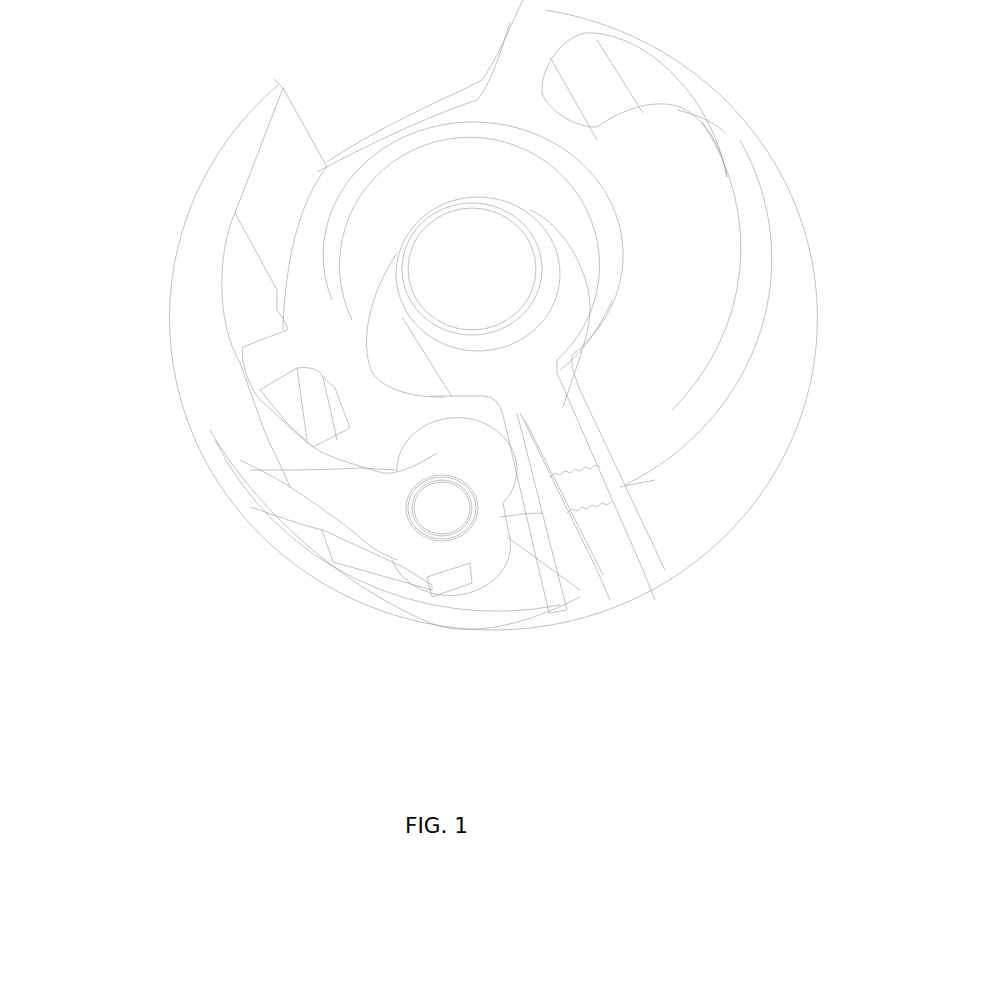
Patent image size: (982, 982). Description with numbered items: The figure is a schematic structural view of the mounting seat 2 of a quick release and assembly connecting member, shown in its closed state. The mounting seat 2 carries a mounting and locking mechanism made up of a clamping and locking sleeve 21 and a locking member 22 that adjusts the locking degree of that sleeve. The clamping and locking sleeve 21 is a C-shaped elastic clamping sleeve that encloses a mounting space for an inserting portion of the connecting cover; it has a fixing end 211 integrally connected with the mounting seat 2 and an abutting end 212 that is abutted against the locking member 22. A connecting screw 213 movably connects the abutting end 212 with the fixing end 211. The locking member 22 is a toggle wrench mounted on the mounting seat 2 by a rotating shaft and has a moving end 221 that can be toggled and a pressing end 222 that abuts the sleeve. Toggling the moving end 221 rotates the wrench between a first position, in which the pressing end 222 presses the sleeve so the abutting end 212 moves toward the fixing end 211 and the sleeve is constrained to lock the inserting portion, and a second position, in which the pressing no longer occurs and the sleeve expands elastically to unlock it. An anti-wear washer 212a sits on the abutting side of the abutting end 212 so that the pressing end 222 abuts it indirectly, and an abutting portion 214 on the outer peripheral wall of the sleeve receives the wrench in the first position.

The mounting seat 2 is at (762, 395).
The clamping and locking sleeve 21 is at (323, 213).
The fixing end 211 is at (617, 427).
The abutting end 212 is at (542, 488).
The anti-wear washer 212a is at (510, 520).
The connecting screw 213 is at (587, 488).
The abutting portion 214 is at (266, 362).
The locking member 22 is at (285, 470).
The moving end 221 is at (208, 242).
The pressing end 222 is at (482, 473).